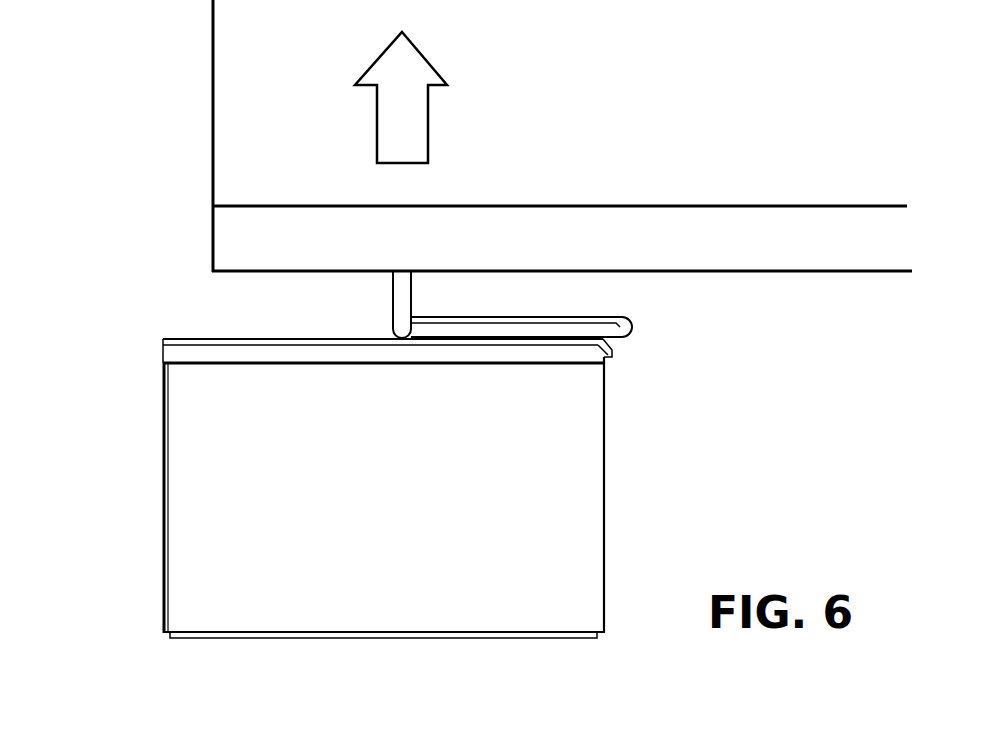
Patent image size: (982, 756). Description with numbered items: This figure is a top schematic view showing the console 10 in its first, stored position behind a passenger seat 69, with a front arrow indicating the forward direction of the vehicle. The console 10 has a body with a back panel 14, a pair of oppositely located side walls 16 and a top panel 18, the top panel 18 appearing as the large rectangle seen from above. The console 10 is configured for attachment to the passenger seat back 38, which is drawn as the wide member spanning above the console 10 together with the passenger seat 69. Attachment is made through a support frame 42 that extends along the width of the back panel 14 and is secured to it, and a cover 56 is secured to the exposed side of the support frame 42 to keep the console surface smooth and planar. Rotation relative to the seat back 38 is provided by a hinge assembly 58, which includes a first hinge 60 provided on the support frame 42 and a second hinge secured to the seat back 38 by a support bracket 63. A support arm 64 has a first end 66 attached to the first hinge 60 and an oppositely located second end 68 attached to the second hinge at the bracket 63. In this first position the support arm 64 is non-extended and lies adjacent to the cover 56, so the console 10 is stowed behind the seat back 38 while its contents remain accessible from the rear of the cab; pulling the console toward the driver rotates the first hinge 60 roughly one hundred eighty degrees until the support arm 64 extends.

The console 10 is at (120, 443).
The back panel 14 is at (182, 362).
The side walls 16 is at (606, 502).
The top panel 18 is at (215, 575).
The passenger seat back 38 is at (777, 272).
The support frame 42 is at (210, 355).
The cover 56 is at (238, 338).
The hinge assembly 58 is at (643, 300).
The first hinge 60 is at (618, 345).
The support bracket 63 is at (397, 292).
The support arm 64 is at (515, 332).
The first end 66 is at (632, 325).
The second end 68 is at (418, 323).
The passenger seat 69 is at (178, 53).